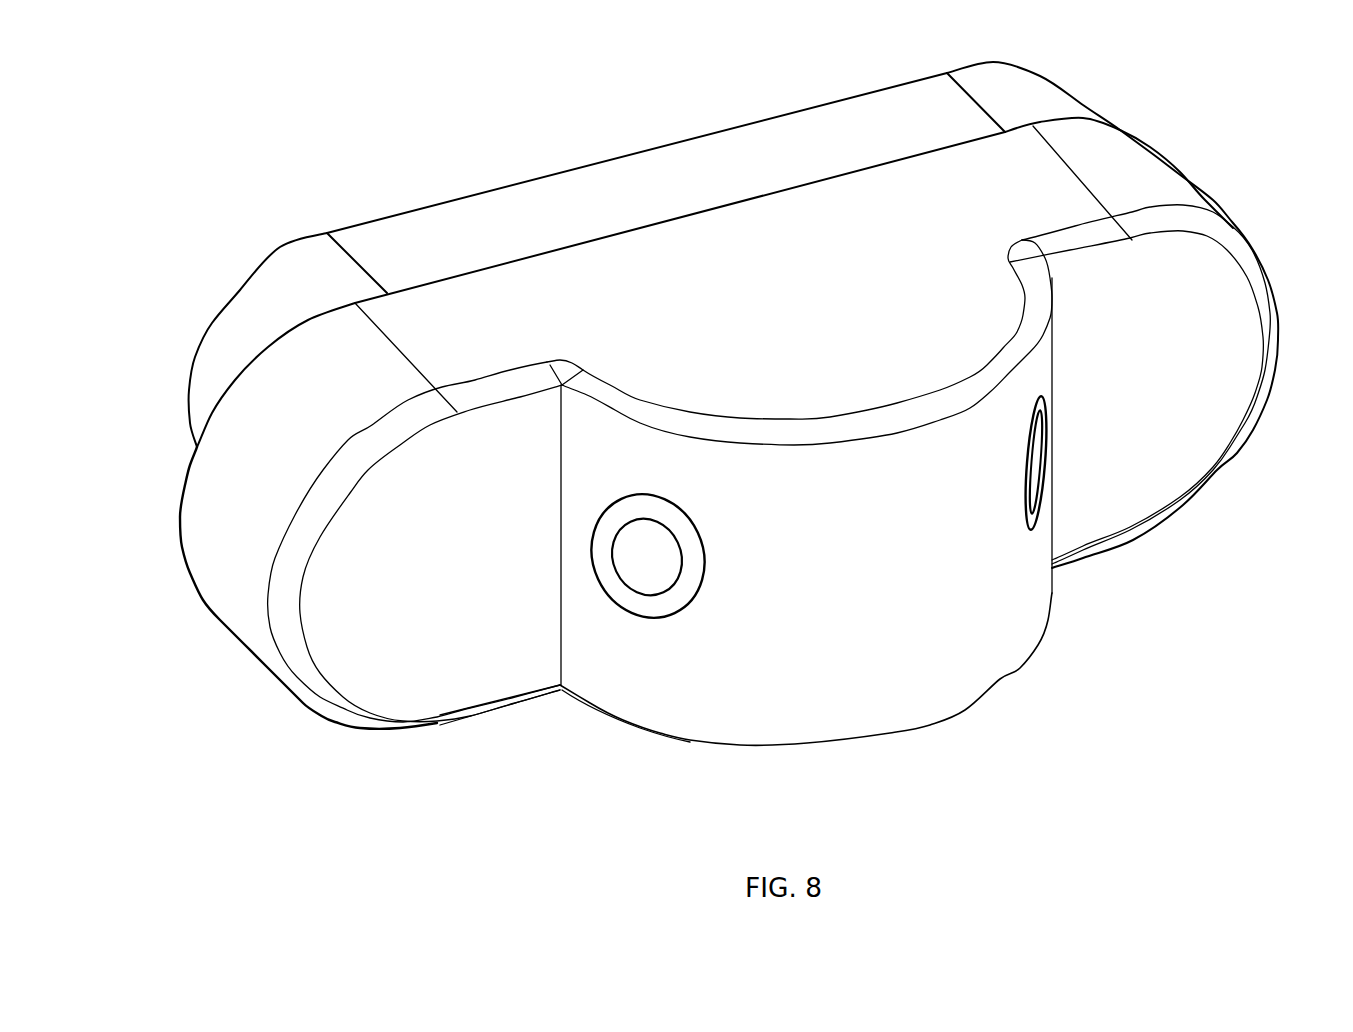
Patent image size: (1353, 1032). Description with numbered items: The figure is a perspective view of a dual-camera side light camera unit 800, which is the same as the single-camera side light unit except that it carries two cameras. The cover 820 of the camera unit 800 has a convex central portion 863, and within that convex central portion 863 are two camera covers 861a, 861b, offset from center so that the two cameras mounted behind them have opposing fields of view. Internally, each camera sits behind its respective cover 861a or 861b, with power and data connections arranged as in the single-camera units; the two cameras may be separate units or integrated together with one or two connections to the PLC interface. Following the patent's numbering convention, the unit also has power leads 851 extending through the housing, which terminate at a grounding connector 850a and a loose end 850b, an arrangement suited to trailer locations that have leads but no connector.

The dual-camera side light camera unit 800 is at (508, 106).
The cover 820 is at (1228, 322).
The grounding connector 850a is at (185, 600).
The loose end 850b is at (257, 630).
The power leads 851 is at (275, 555).
The camera cover 861a is at (652, 573).
The camera cover 861b is at (1043, 487).
The convex central portion 863 is at (899, 642).